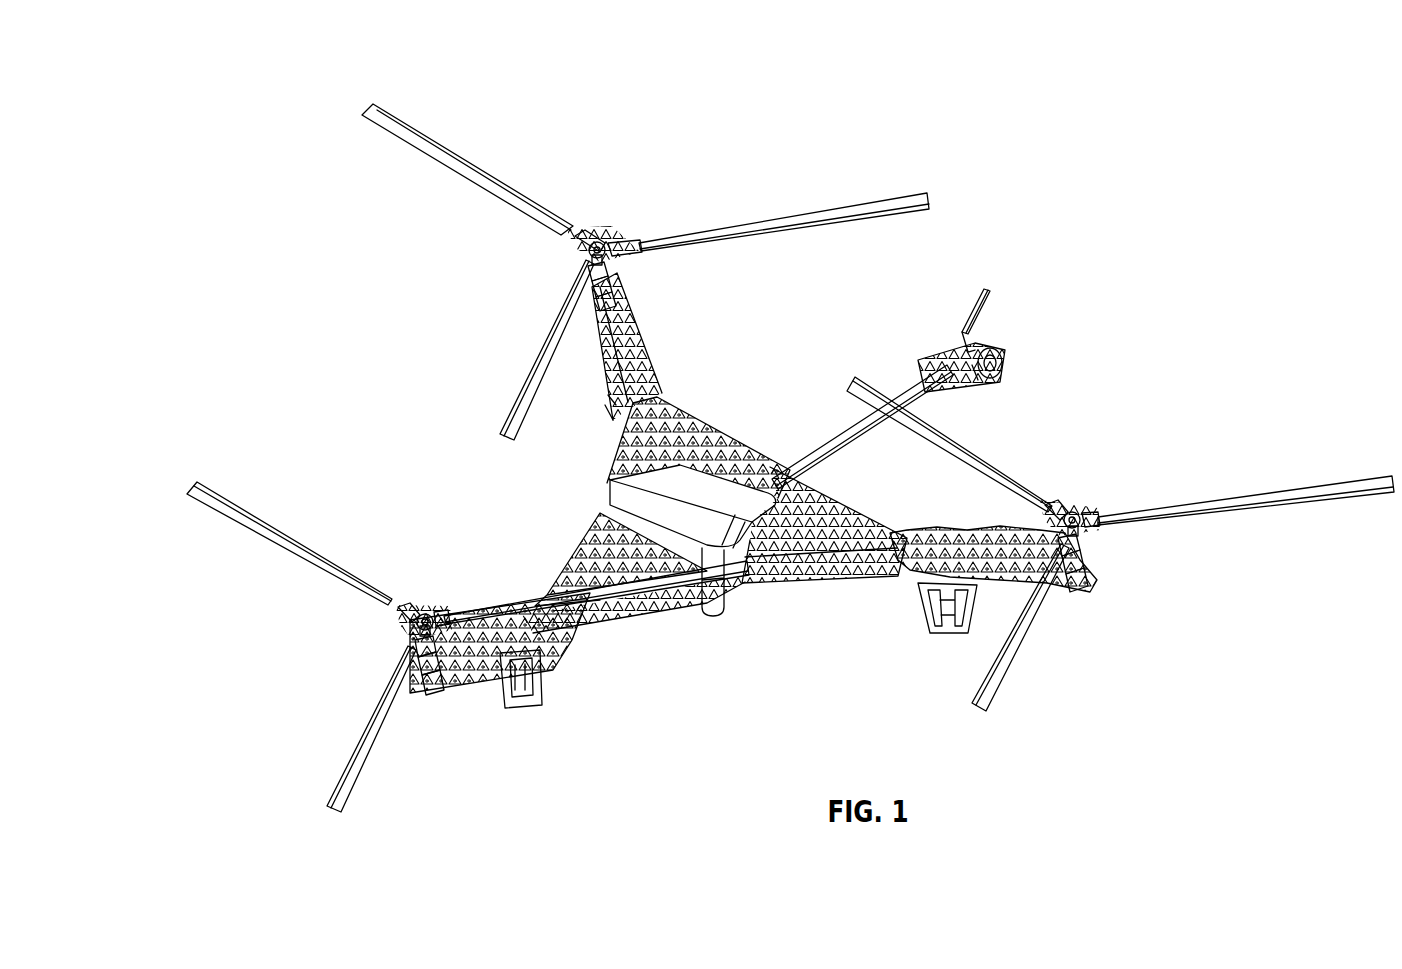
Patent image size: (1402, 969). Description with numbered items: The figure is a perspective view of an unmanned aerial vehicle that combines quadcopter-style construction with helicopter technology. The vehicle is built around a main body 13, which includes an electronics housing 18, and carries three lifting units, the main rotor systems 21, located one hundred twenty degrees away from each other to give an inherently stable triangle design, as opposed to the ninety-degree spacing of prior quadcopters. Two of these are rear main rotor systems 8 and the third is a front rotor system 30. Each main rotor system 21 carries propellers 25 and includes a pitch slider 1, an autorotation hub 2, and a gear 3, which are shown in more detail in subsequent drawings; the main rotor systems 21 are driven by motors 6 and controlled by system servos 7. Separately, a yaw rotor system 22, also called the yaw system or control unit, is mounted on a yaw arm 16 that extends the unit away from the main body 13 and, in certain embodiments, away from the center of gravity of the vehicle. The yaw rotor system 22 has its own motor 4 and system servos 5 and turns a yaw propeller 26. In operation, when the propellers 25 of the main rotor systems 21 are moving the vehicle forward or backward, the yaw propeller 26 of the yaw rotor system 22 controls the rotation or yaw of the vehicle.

The pitch slider 1 is at (587, 280).
The autorotation hub 2 is at (593, 298).
The gear 3 is at (587, 307).
The motor 4 is at (985, 347).
The system servos 5 is at (920, 362).
The motors 6 is at (610, 430).
The system servos 7 is at (597, 282).
The rear main rotor systems 8 is at (598, 248).
The main body 13 is at (662, 486).
The yaw arm 16 is at (832, 443).
The electronics housing 18 is at (725, 607).
The main rotor systems 21 is at (605, 247).
The yaw rotor system 22 is at (975, 372).
The propellers 25 is at (437, 153).
The yaw propeller 26 is at (988, 292).
The front rotor system 30 is at (432, 625).